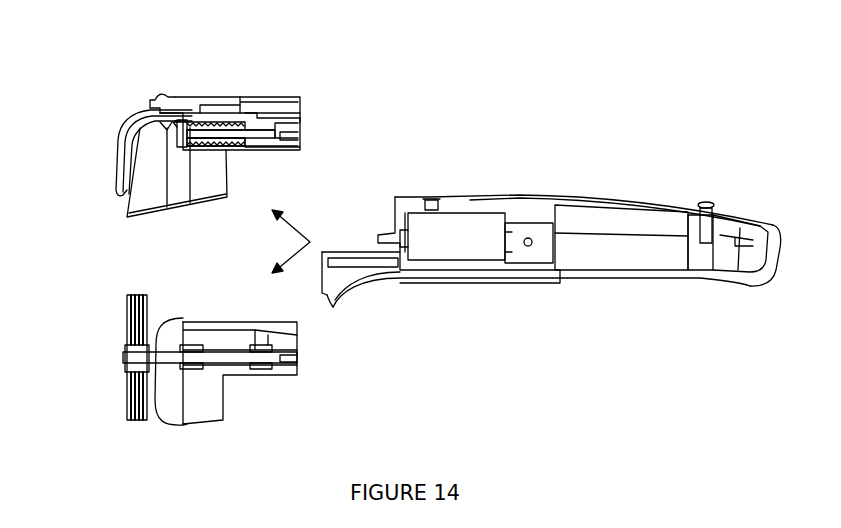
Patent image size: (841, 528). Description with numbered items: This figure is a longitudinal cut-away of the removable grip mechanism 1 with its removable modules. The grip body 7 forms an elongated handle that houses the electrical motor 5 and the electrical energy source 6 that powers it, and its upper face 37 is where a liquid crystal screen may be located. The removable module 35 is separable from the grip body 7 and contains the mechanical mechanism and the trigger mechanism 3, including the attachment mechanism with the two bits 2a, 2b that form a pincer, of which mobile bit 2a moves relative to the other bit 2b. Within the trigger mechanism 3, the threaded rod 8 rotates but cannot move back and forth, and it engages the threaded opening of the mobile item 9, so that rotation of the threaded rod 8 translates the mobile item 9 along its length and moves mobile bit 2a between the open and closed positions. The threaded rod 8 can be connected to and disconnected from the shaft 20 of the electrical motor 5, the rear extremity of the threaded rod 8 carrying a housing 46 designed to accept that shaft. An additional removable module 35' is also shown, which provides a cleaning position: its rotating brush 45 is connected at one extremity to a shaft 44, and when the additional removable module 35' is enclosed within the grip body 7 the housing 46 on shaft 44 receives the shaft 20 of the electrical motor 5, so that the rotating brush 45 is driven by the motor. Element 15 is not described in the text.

The removable grip mechanism 1 is at (651, 170).
The mobile bit 2a is at (125, 158).
The bit 2b is at (127, 200).
The trigger mechanism 3 is at (258, 78).
The electrical motor 5 is at (437, 257).
The electrical energy source 6 is at (620, 267).
The grip body 7 is at (707, 283).
The threaded rod 8 is at (210, 137).
The mobile item 9 is at (233, 147).
The connector body 15 is at (197, 117).
The shaft 20 is at (390, 223).
The removable module 35 is at (279, 110).
The additional removable module 35' is at (234, 383).
The upper face 37 is at (473, 187).
The shaft 44 is at (232, 358).
The rotating brush 45 is at (128, 308).
The housing 46 is at (310, 363).